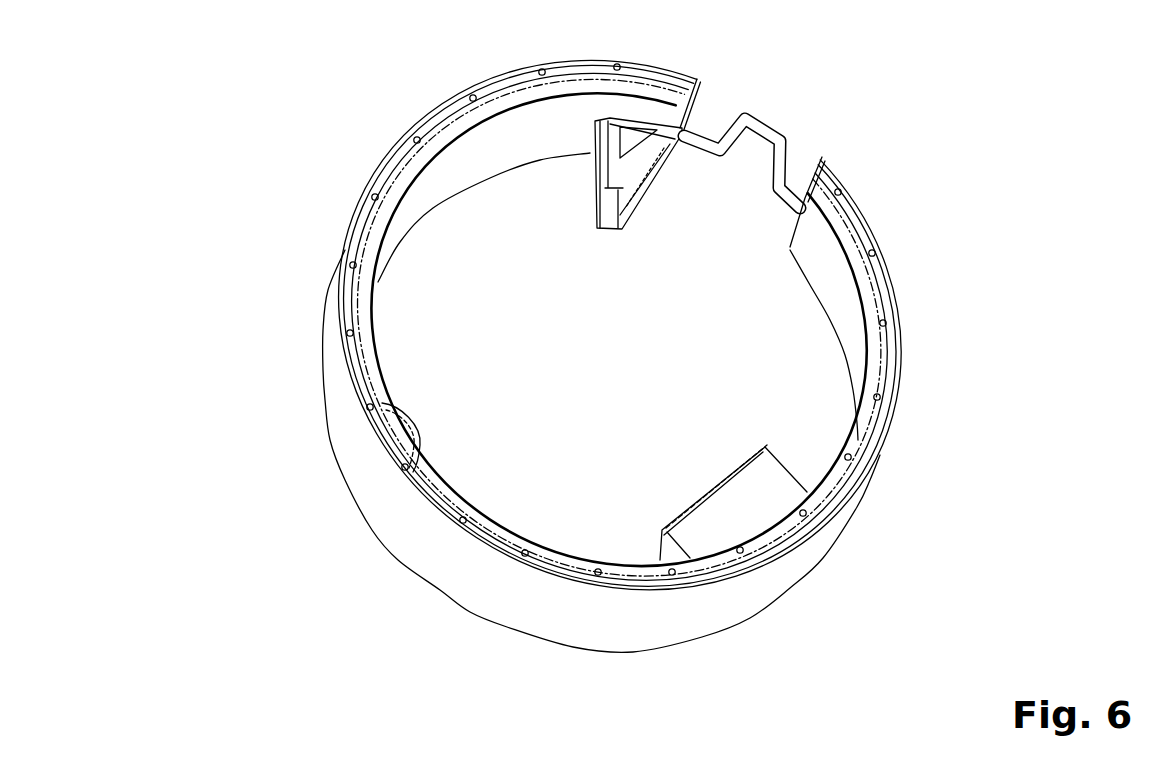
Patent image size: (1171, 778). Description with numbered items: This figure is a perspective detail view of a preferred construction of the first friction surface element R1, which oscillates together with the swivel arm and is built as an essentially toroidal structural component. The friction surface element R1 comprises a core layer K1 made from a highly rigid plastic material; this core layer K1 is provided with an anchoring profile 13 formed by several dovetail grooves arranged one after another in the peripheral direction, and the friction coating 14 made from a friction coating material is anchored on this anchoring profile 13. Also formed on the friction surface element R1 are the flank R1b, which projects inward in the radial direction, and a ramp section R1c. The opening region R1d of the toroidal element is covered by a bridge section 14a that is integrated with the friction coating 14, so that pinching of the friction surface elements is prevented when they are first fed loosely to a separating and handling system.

The first friction surface element R1 is at (330, 176).
The friction coating 14 is at (343, 431).
The bridge section 14a is at (768, 120).
The flank R1b is at (720, 521).
The ramp section R1c is at (638, 193).
The opening region R1d is at (828, 122).
The core layer K1 is at (365, 367).
The anchoring profile 13 is at (378, 393).